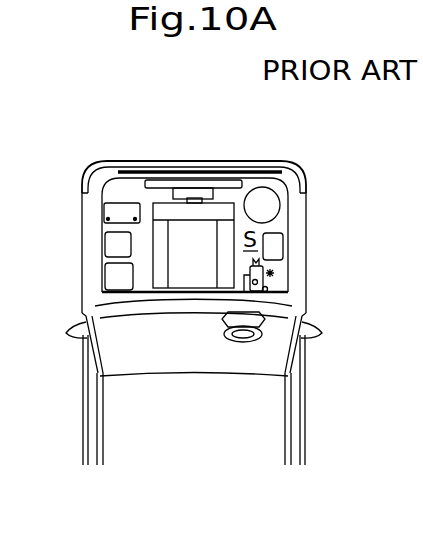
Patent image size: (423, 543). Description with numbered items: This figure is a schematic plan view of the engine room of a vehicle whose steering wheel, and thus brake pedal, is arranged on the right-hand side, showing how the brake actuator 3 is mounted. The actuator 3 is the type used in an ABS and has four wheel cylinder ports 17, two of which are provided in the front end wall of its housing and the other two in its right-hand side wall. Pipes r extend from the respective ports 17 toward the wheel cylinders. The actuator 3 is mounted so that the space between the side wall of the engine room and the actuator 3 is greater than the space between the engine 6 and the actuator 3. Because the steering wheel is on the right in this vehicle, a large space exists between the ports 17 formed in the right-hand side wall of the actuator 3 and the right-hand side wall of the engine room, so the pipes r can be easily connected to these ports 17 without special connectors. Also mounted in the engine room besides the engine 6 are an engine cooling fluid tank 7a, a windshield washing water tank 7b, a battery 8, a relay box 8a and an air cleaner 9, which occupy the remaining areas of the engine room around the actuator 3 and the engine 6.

The actuator 3 is at (283, 297).
The engine 6 is at (198, 245).
The engine cooling fluid tank 7a is at (118, 278).
The windshield washing water tank 7b is at (117, 245).
The battery 8 is at (120, 211).
The relay box 8a is at (277, 246).
The air cleaner 9 is at (263, 203).
The wheel cylinder ports 17 is at (270, 268).
The pipes r is at (272, 278).